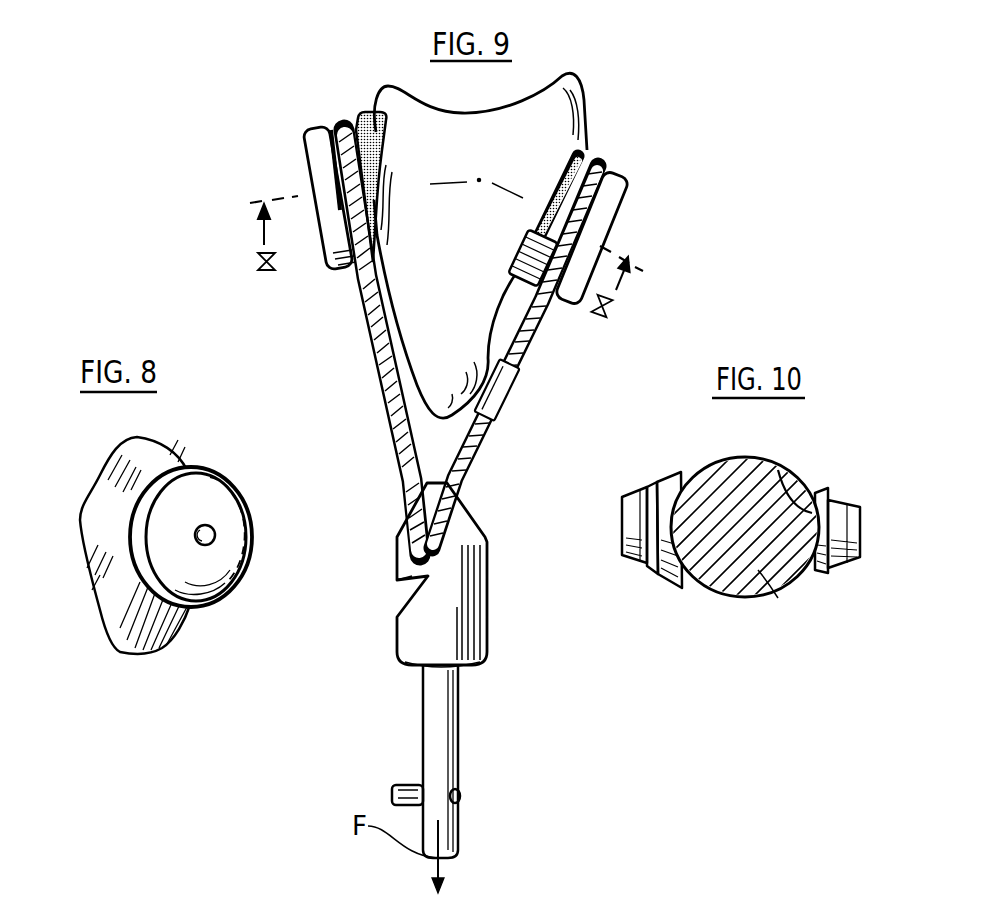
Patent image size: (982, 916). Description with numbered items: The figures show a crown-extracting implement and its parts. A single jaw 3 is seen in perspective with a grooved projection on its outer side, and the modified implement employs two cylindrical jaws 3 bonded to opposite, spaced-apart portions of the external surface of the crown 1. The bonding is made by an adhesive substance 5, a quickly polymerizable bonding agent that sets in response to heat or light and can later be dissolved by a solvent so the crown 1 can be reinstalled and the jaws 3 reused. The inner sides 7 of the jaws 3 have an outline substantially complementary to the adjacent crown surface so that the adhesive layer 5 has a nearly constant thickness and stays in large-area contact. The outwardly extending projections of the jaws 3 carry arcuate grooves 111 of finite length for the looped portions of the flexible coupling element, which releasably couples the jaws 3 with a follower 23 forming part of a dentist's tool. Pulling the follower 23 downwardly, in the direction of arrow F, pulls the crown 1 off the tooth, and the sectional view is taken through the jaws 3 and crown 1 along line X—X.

In FIG. 9, the crown 1 is at (457, 289).
In FIG. 8, the crown 1 is at (117, 587).
In FIG. 10, the crown 1 is at (778, 598).
In FIG. 9, the jaws 3 is at (602, 226).
In FIG. 8, the jaws 3 is at (187, 503).
In FIG. 10, the jaws 3 is at (853, 532).
In FIG. 9, the adhesive substance 5 is at (367, 120).
In FIG. 10, the adhesive substance 5 is at (680, 476).
In FIG. 10, the inner sides 7 is at (782, 455).
In FIG. 9, the arcuate grooves 111 is at (325, 130).
In FIG. 10, the arcuate grooves 111 is at (843, 515).
In FIG. 9, the follower 23 is at (415, 638).